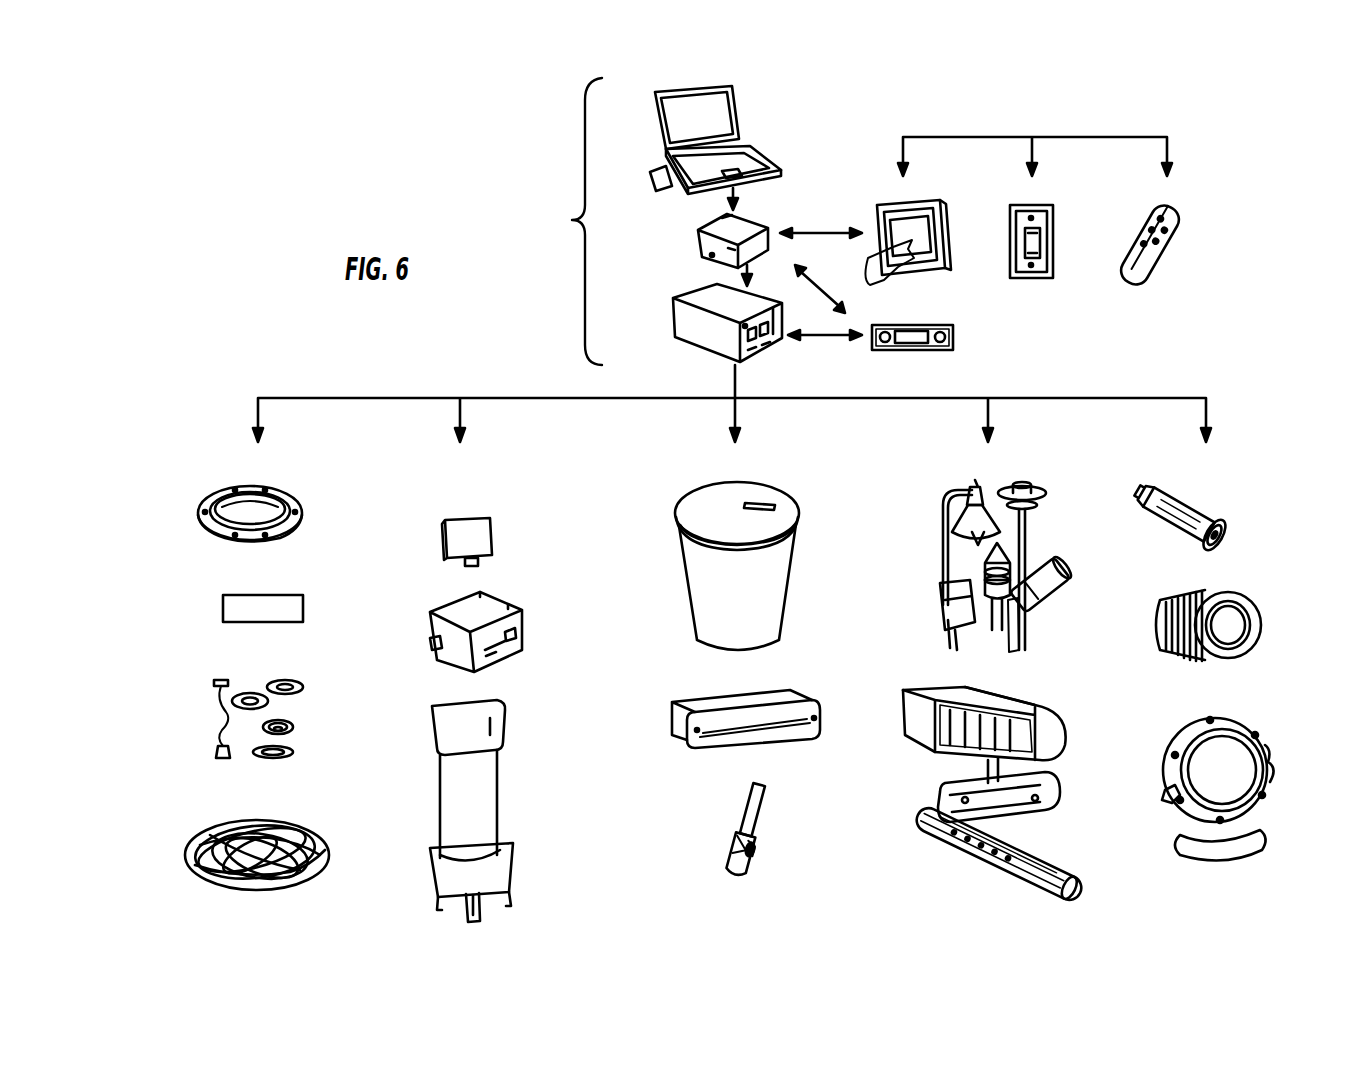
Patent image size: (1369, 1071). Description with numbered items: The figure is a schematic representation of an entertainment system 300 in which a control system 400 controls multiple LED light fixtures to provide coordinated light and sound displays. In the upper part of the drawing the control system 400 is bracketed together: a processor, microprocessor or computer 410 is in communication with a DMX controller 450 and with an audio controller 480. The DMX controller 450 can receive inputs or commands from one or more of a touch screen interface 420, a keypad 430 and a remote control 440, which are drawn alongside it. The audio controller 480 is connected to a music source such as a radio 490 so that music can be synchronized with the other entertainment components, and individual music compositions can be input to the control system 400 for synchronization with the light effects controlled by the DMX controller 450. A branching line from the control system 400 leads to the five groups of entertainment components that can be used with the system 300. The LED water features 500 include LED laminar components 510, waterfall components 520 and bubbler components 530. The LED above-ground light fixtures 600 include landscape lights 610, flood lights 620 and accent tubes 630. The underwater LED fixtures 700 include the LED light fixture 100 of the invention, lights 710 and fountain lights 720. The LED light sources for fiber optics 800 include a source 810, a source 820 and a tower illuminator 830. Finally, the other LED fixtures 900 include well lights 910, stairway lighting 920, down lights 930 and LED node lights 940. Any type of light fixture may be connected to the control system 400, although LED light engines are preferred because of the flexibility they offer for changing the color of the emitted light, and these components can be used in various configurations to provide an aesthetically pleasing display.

The entertainment system 300 is at (1228, 108).
The control system 400 is at (564, 221).
The computer 410 is at (735, 121).
The touch screen interface 420 is at (938, 258).
The keypad 430 is at (1031, 272).
The remote control 440 is at (1136, 275).
The DMX controller 450 is at (745, 222).
The audio controller 480 is at (710, 300).
The radio 490 is at (953, 337).
The LED water features 500 is at (736, 409).
The LED laminar components 510 is at (775, 575).
The waterfall components 520 is at (818, 716).
The bubbler components 530 is at (763, 813).
The LED above-ground light fixtures 600 is at (989, 409).
The landscape lights 610 is at (1062, 537).
The flood lights 620 is at (1028, 704).
The accent tubes 630 is at (1045, 858).
The underwater LED fixtures 700 is at (1207, 409).
The LED light fixture 100 is at (1222, 496).
The lights 710 is at (1253, 613).
The fountain lights 720 is at (1262, 758).
The LED light sources for fiber optics 800 is at (461, 409).
The source 810 is at (478, 532).
The source 820 is at (500, 646).
The tower illuminator 830 is at (493, 777).
The other LED fixtures 900 is at (259, 409).
The well lights 910 is at (303, 509).
The stairway lighting 920 is at (293, 609).
The down lights 930 is at (297, 704).
The LED node lights 940 is at (315, 794).